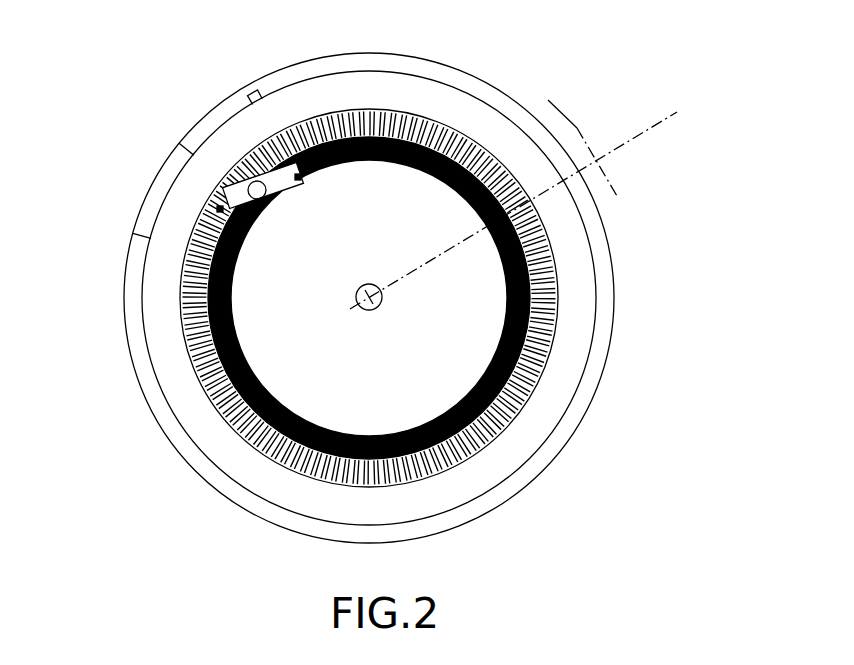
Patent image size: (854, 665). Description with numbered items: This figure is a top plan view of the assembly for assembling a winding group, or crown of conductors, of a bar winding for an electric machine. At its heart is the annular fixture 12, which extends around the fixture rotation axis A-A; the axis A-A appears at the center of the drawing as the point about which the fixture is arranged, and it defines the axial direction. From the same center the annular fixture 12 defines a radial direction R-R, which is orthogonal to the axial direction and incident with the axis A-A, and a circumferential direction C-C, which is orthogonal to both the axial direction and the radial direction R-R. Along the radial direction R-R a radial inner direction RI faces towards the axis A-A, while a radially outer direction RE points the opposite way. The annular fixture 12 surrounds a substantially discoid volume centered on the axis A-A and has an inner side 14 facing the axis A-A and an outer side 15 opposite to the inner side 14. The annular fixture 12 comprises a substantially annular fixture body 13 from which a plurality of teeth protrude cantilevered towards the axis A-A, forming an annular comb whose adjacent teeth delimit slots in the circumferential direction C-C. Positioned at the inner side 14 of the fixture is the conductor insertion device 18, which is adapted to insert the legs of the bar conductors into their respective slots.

The annular fixture 12 is at (594, 285).
The fixture body 13 is at (523, 432).
The inner side 14 is at (400, 171).
The outer side 15 is at (467, 48).
The conductor insertion device 18 is at (229, 172).
The fixture rotation axis A-A is at (360, 306).
The radial direction R-R is at (640, 126).
The circumferential direction C-C is at (575, 127).
The radially outer direction RE is at (596, 125).
The radial inner direction RI is at (604, 183).